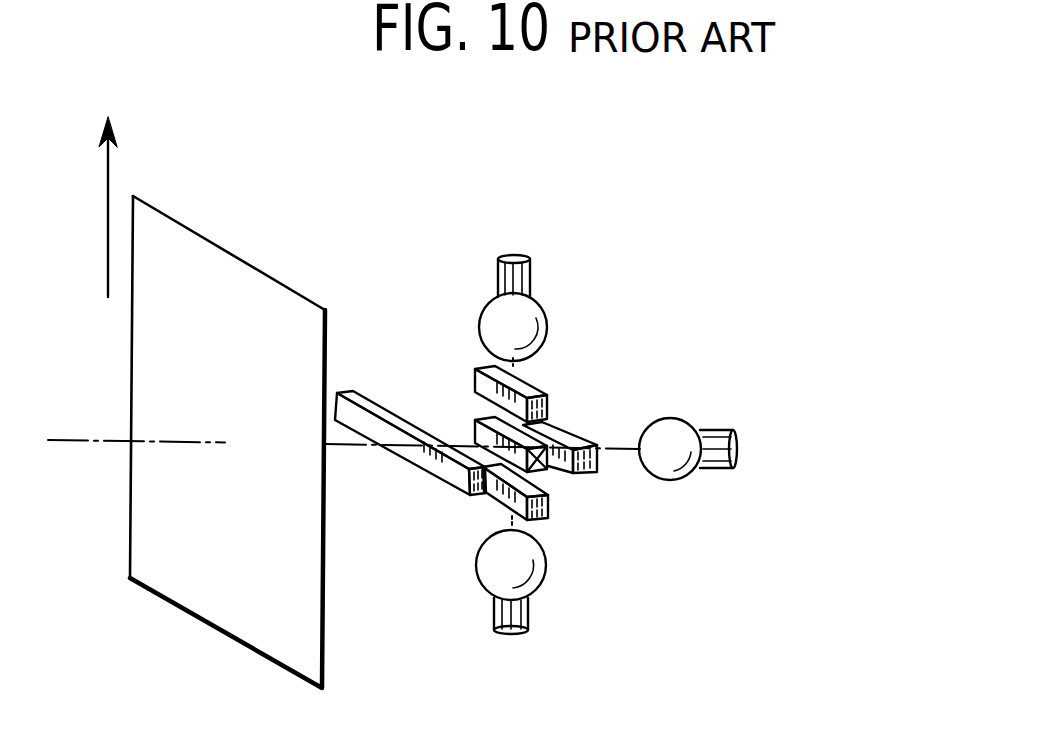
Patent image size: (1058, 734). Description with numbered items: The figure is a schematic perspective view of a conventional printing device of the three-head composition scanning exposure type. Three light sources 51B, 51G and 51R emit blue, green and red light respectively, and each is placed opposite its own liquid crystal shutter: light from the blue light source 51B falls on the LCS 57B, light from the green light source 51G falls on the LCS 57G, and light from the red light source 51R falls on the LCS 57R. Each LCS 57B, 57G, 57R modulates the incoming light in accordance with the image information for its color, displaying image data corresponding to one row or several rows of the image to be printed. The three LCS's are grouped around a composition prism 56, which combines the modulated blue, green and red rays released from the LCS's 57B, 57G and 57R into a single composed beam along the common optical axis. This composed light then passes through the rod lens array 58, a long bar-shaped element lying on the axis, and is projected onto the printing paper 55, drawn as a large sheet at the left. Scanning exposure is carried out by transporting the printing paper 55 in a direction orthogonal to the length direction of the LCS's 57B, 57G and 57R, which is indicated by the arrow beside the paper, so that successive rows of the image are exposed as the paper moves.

The printing paper 55 is at (233, 270).
The rod lens array 58 is at (415, 467).
The LCS for red light 57R is at (552, 400).
The composition prism 56 is at (548, 475).
The LCS for blue light 57B is at (553, 520).
The LCS for green light 57G is at (598, 477).
The light source for red light 51R is at (545, 307).
The light source for blue light 51B is at (488, 590).
The light source for green light 51G is at (680, 432).